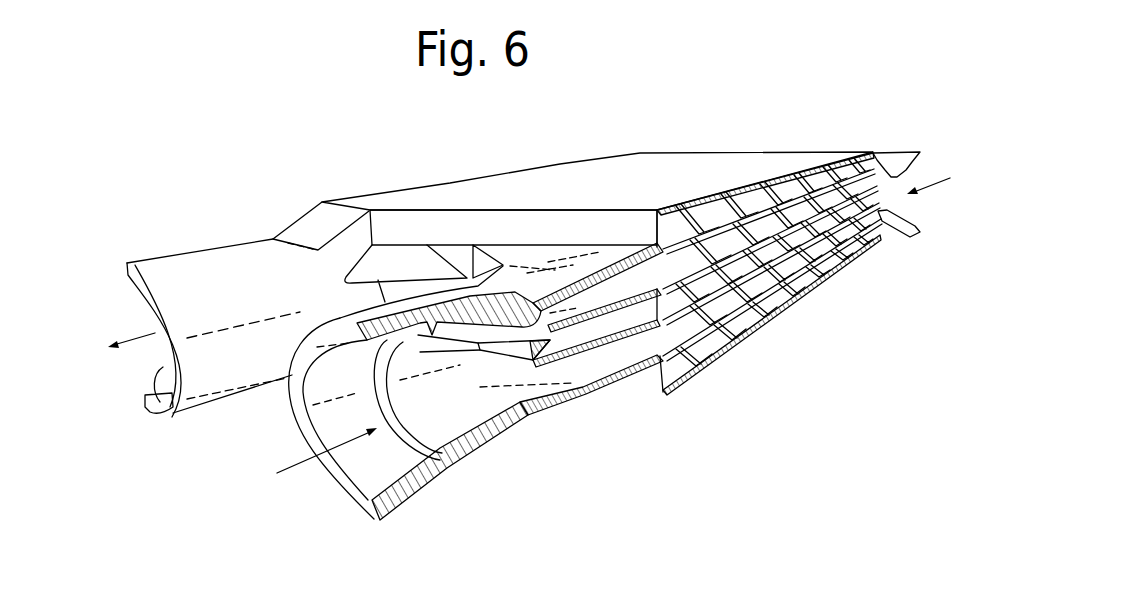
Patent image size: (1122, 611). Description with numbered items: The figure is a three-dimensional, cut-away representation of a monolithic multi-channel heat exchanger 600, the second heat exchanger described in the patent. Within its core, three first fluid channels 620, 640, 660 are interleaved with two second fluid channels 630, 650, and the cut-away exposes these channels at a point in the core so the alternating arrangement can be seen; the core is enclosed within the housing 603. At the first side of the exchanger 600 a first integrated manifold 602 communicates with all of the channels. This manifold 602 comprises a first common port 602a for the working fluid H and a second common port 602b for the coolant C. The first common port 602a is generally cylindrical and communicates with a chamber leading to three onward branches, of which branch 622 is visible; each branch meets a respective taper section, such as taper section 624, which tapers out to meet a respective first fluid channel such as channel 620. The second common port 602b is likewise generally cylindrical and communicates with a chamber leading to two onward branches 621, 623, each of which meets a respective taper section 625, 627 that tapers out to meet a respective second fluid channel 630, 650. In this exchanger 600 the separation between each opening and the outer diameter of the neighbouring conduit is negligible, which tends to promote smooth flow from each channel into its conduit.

The monolithic multi-channel heat exchanger 600 is at (662, 132).
The first integrated manifold 602 is at (472, 480).
The first common port 602a is at (373, 472).
The second common port 602b is at (172, 410).
The housing 603 is at (556, 178).
The first fluid channel 620 is at (727, 207).
The onward branch 621 is at (577, 400).
The onward branch 622 is at (310, 227).
The onward branch 623 is at (547, 320).
The taper section 624 is at (447, 197).
The taper section 625 is at (627, 347).
The taper section 627 is at (627, 280).
The second fluid channel 630 is at (768, 220).
The first fluid channel 640 is at (748, 335).
The second fluid channel 650 is at (788, 312).
The first fluid channel 660 is at (835, 270).